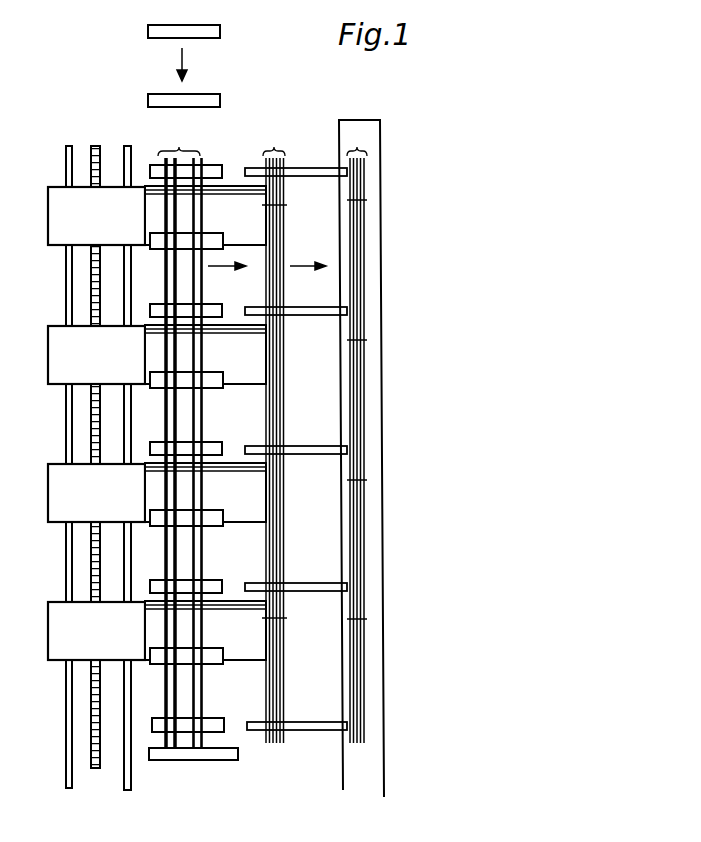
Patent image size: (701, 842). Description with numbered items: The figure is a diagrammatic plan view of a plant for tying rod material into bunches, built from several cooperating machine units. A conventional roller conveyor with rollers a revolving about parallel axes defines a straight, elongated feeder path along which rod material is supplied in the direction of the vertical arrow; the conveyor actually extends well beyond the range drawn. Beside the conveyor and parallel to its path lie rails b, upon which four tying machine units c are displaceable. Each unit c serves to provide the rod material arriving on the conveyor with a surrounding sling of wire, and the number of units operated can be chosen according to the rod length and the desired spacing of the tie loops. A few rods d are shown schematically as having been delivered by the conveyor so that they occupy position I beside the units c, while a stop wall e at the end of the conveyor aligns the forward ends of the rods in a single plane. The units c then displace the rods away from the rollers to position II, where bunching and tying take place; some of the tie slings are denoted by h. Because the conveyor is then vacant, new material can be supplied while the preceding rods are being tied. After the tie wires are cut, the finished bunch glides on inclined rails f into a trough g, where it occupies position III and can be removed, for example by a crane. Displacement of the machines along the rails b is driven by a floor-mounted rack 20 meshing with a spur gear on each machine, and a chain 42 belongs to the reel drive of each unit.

The rollers a is at (220, 31).
The rails b is at (64, 287).
The tying machine units c is at (51, 212).
The rods d is at (200, 158).
The stop wall e is at (190, 751).
The inclined rails f is at (315, 176).
The trough g is at (381, 143).
The tie slings h is at (281, 206).
The rack 20 is at (96, 153).
The chain 42 is at (234, 191).
The position I is at (179, 139).
The position II is at (274, 139).
The position III is at (356, 140).